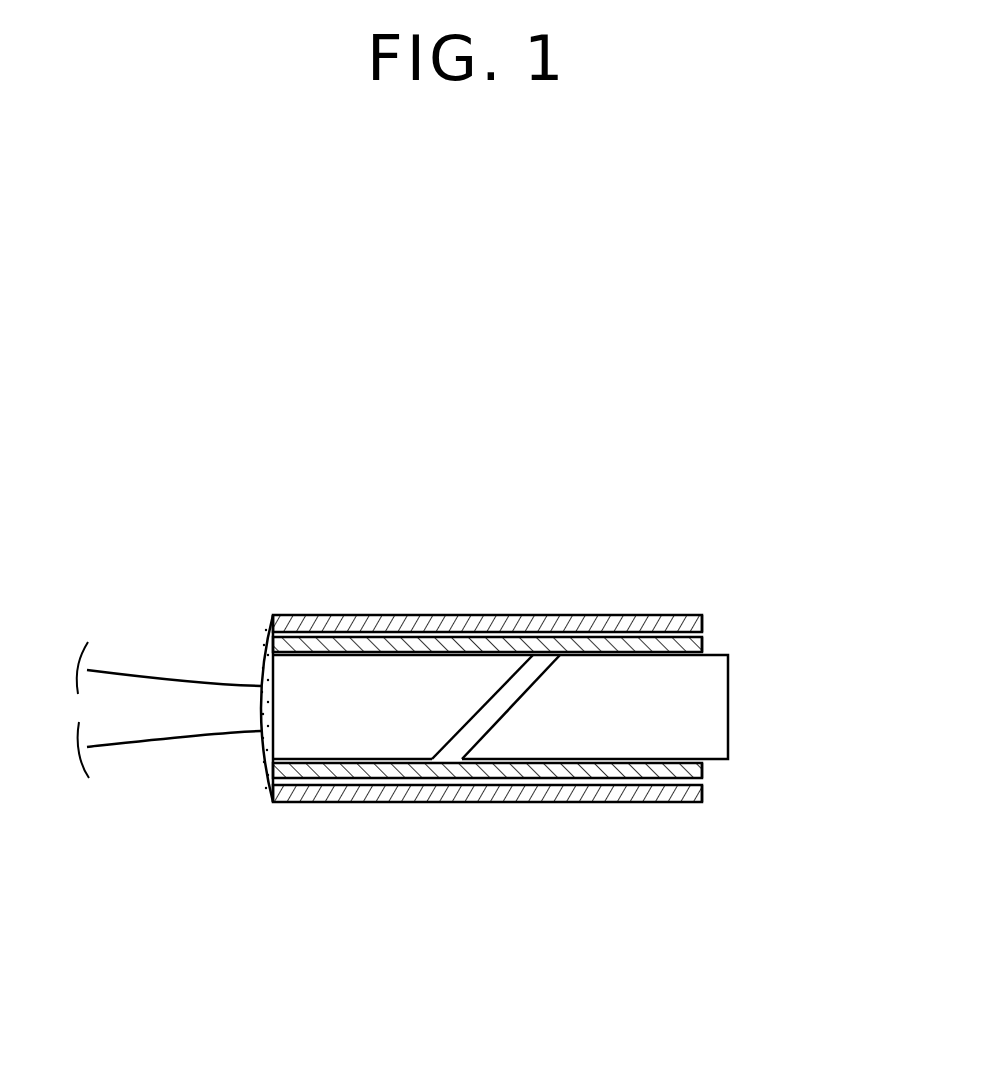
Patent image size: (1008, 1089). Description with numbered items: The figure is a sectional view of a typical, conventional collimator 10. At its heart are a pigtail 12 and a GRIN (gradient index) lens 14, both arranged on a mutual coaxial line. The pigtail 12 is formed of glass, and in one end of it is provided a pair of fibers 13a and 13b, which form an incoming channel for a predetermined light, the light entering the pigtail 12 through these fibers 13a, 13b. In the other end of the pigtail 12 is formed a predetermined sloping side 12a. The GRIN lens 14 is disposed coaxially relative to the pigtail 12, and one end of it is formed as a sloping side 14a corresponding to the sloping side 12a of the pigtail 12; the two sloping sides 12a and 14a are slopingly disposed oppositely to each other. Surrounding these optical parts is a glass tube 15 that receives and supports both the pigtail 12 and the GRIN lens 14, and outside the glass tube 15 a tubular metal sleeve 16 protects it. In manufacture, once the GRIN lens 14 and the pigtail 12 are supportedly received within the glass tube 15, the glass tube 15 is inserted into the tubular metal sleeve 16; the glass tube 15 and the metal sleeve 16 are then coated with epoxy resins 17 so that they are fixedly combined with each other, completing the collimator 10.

The collimator 10 is at (734, 531).
The pigtail 12 is at (317, 737).
The sloping side 12a is at (485, 760).
The fiber 13a is at (128, 677).
The fiber 13b is at (217, 732).
The GRIN lens 14 is at (597, 737).
The sloping side 14a is at (486, 760).
The glass tube 15 is at (470, 642).
The tubular metal sleeve 16 is at (623, 615).
The epoxy resins 17 is at (260, 684).